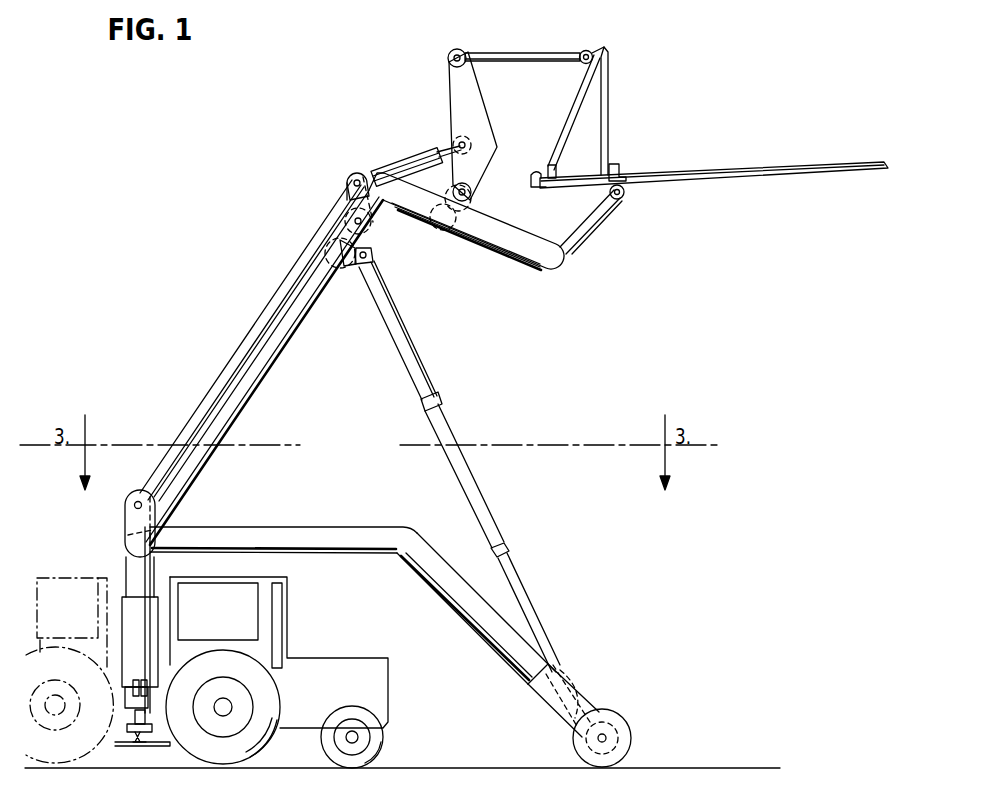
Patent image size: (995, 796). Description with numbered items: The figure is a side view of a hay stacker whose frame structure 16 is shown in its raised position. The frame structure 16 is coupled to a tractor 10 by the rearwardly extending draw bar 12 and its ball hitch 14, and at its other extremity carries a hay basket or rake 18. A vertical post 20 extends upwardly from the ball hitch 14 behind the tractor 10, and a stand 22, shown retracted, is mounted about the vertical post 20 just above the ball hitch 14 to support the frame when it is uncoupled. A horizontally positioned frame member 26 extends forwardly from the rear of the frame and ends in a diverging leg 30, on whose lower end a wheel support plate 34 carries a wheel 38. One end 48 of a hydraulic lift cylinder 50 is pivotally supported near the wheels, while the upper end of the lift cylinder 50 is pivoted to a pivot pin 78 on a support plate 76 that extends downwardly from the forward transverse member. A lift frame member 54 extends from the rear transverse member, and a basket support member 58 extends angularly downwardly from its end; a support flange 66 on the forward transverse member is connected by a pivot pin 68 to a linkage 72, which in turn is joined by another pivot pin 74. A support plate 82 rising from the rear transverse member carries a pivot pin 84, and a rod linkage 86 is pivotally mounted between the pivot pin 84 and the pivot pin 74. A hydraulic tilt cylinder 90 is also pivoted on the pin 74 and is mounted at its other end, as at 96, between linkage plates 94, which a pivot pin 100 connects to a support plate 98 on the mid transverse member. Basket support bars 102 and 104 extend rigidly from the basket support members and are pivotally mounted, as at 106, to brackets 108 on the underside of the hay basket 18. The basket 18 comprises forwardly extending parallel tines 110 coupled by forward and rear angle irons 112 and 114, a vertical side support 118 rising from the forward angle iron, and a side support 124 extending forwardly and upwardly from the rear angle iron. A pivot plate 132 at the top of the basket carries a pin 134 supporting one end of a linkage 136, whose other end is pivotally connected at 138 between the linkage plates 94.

The tractor 10 is at (377, 685).
The draw bar 12 is at (167, 745).
The ball hitch 14 is at (133, 737).
The frame structure 16 is at (168, 303).
The hay basket 18 is at (746, 120).
The vertical post 20 is at (165, 560).
The stand 22 is at (132, 615).
The horizontally positioned frame member 26 is at (317, 533).
The leg 30 is at (467, 597).
The wheel support plate 34 is at (553, 688).
The wheel 38 is at (627, 735).
The end of hydraulic lift cylinder 48 is at (533, 600).
The hydraulic lift cylinder 50 is at (415, 363).
The lift frame member 54 is at (260, 363).
The basket support member 58 is at (520, 245).
The support flange 66 is at (340, 232).
The pivot pin 68 is at (355, 243).
The linkage 72 is at (347, 178).
The pivot pin 74 is at (357, 179).
The support plate 76 is at (355, 268).
The pivot pin 78 is at (372, 257).
The support plate 82 is at (127, 519).
The pivot pin 84 is at (138, 502).
The rod linkage 86 is at (262, 328).
The hydraulic tilt cylinder 90 is at (414, 158).
The linkage plate 94 is at (466, 103).
The support plate 96 is at (465, 146).
The support plate 98 is at (473, 194).
The pivot pin 100 is at (450, 207).
The basket support bar 102 is at (582, 792).
The basket support bar 104 is at (588, 227).
The pivotal mounting 106 is at (619, 200).
The bracket 108 is at (624, 189).
The tines 110 is at (825, 167).
The forward angle iron 112 is at (611, 171).
The rear angle iron 114 is at (533, 178).
The vertical side support 118 is at (609, 117).
The side support 124 is at (580, 108).
The pivot plate 132 is at (606, 46).
The pin 134 is at (585, 52).
The linkage 136 is at (520, 52).
The pivotal connection 138 is at (457, 52).